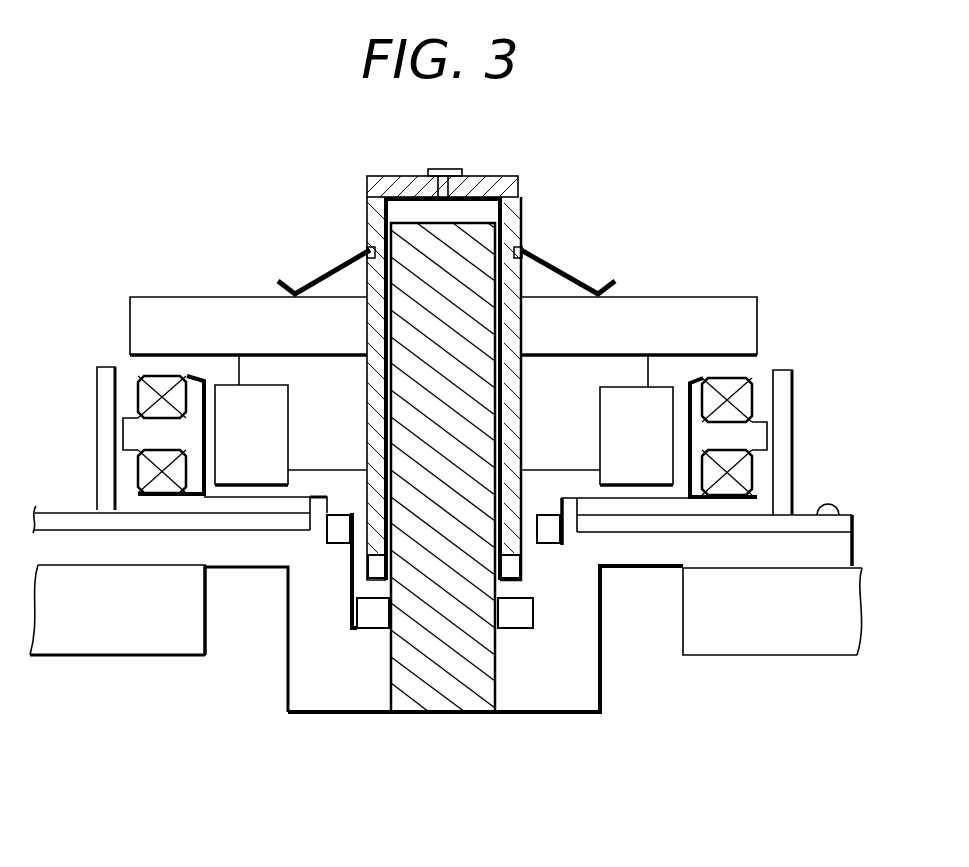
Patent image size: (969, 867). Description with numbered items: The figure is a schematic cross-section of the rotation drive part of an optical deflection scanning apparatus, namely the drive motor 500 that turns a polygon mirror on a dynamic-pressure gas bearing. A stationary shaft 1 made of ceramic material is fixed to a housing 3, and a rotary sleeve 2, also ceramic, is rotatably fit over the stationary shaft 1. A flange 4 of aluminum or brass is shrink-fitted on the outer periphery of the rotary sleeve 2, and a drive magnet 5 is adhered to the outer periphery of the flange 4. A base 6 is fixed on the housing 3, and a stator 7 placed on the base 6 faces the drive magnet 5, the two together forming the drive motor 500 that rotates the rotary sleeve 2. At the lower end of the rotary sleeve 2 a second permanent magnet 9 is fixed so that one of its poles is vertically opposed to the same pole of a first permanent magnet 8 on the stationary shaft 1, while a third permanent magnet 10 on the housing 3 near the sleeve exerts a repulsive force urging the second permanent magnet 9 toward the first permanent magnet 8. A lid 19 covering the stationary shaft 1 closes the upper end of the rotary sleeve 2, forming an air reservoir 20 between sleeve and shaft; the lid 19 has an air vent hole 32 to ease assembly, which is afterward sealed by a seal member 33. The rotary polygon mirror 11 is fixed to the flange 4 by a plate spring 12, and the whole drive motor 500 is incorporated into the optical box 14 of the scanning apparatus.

The stationary shaft 1 is at (432, 695).
The rotary sleeve 2 is at (508, 330).
The housing 3 is at (527, 695).
The flange 4 is at (605, 365).
The drive magnet 5 is at (655, 400).
The base 6 is at (775, 520).
The stator 7 is at (752, 436).
The first permanent magnet 8 is at (362, 628).
The second permanent magnet 9 is at (367, 568).
The third permanent magnet 10 is at (327, 542).
The rotary polygon mirror 11 is at (172, 305).
The plate spring 12 is at (295, 282).
The optical box 14 is at (737, 645).
The lid 19 is at (370, 192).
The air reservoir 20 is at (400, 208).
The air vent hole 32 is at (463, 178).
The seal member 33 is at (445, 188).
The drive motor 500 is at (606, 172).